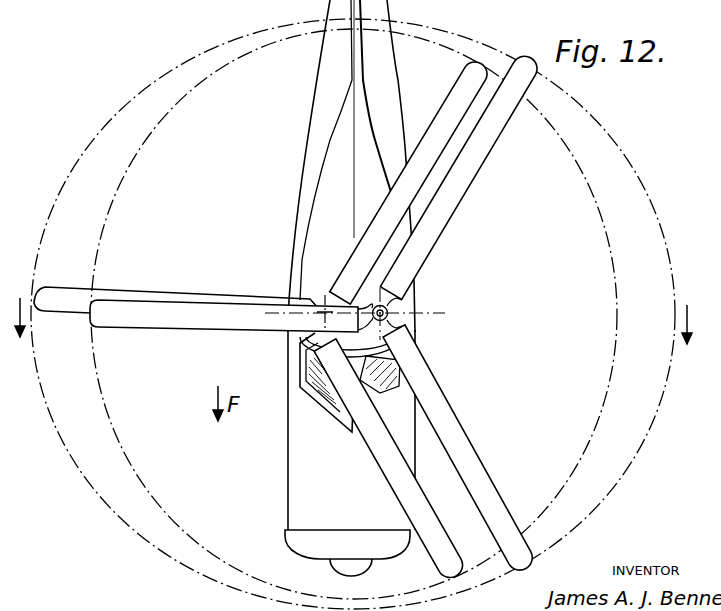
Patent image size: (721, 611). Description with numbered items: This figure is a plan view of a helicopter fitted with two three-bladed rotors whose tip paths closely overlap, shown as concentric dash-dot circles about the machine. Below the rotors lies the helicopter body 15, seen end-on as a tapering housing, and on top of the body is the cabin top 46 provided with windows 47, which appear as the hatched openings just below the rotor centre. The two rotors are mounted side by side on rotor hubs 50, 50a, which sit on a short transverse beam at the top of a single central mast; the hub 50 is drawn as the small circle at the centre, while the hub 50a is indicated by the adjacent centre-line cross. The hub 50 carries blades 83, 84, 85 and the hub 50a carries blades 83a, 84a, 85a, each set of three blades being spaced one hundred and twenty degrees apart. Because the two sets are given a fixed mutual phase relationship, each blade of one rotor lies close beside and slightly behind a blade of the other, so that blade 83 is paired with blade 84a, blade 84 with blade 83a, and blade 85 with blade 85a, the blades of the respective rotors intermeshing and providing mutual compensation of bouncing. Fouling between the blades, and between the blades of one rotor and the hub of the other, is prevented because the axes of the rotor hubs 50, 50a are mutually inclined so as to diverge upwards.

The cabin top 46 is at (330, 193).
The body 15 is at (295, 479).
The windows 47 is at (378, 372).
The rotor hub 50 is at (402, 310).
The rotor hub 50a is at (325, 312).
The blade 83 is at (222, 300).
The blade 83a is at (405, 200).
The blade 84 is at (478, 153).
The blade 84a is at (68, 298).
The blade 85 is at (437, 410).
The blade 85a is at (437, 532).